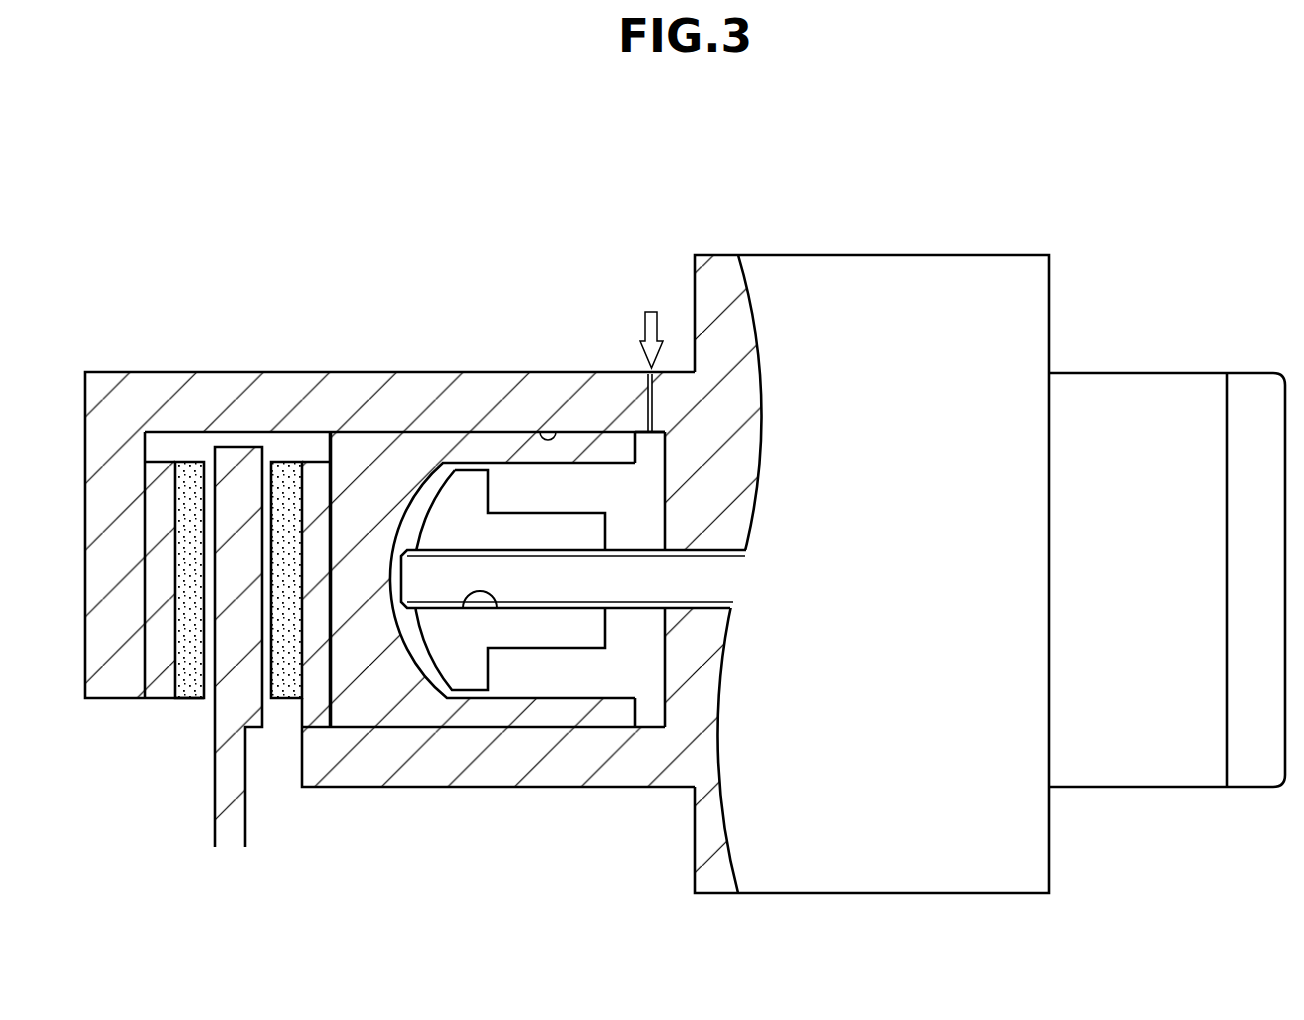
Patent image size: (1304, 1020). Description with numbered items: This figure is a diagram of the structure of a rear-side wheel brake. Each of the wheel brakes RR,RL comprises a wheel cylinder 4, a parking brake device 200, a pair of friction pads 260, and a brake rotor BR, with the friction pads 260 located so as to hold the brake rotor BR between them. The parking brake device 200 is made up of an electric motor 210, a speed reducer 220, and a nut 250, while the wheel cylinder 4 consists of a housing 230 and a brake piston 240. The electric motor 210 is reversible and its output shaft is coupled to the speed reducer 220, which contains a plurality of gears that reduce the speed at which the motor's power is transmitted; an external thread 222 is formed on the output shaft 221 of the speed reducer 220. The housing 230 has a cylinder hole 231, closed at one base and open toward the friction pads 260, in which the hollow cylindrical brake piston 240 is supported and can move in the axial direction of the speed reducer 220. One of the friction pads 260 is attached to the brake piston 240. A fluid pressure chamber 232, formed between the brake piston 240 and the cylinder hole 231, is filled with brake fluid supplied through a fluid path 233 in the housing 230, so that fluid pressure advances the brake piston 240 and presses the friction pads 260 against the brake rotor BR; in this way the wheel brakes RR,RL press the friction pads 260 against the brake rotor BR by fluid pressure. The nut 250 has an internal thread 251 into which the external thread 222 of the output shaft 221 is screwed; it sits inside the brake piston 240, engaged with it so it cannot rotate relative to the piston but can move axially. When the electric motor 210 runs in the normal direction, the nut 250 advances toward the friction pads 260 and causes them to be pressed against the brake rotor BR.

The parking brake device 200 is at (1043, 192).
The electric motor 210 is at (1167, 390).
The speed reducer 220 is at (945, 270).
The output shaft 221 is at (648, 590).
The external thread 222 is at (436, 549).
The housing 230 is at (213, 380).
The cylinder hole 231 is at (546, 431).
The fluid pressure chamber 232 is at (637, 506).
The fluid path 233 is at (648, 400).
The brake piston 240 is at (390, 715).
The nut 250 is at (530, 630).
The internal thread 251 is at (463, 606).
The friction pads 260 is at (285, 700).
The brake rotor BR is at (225, 803).
The wheel cylinder 4 is at (478, 361).
The wheel brakes RR,RL is at (534, 172).